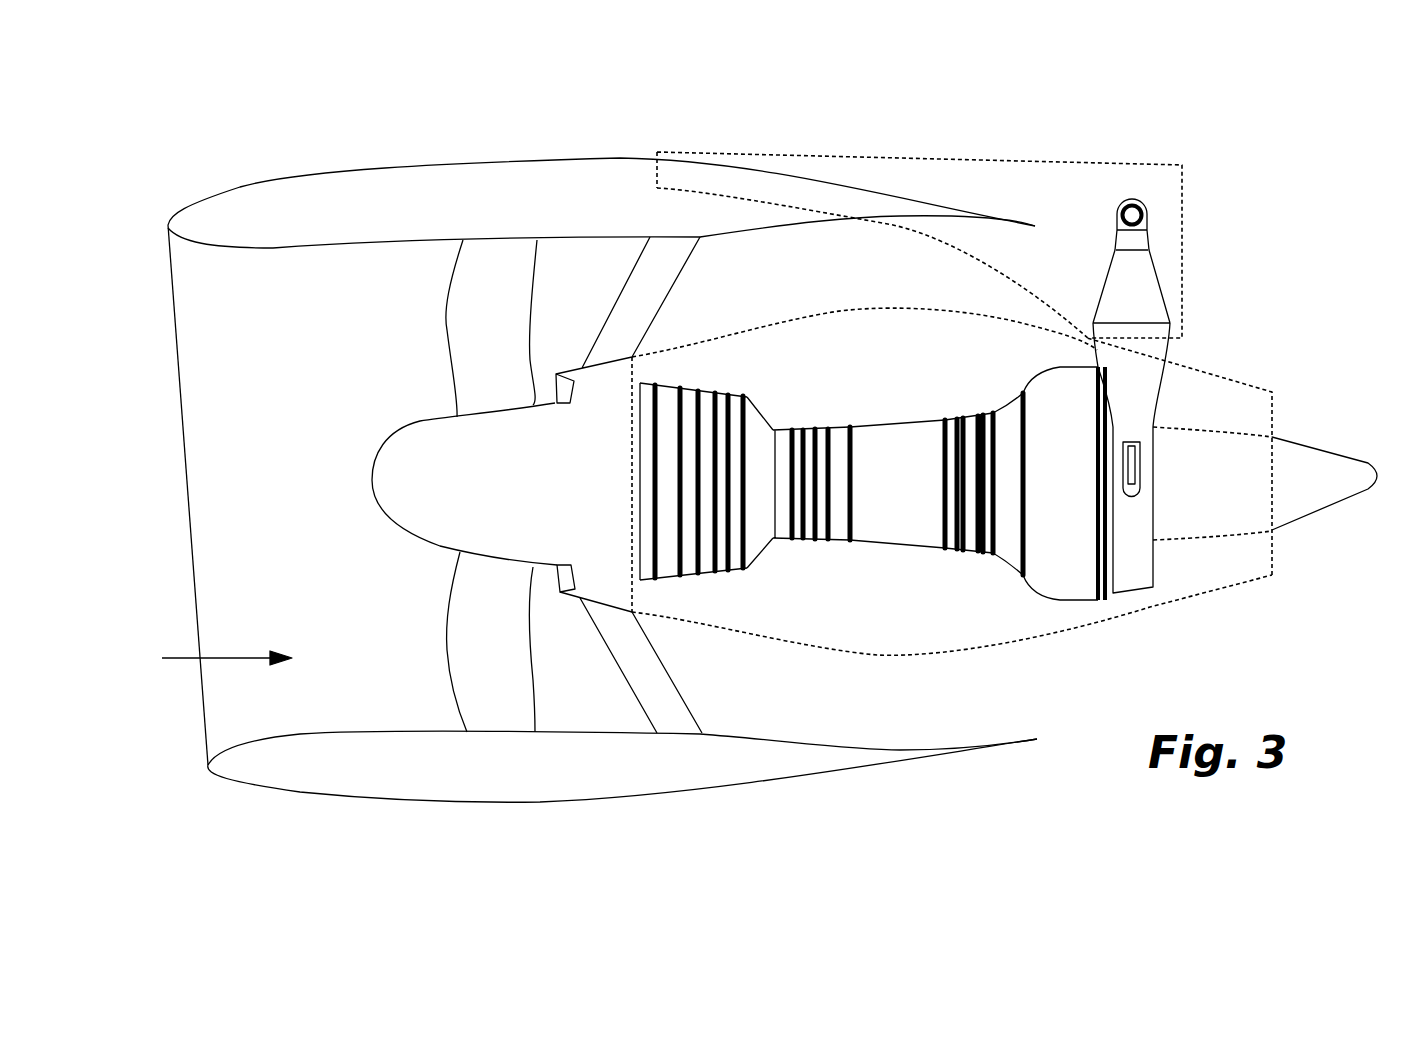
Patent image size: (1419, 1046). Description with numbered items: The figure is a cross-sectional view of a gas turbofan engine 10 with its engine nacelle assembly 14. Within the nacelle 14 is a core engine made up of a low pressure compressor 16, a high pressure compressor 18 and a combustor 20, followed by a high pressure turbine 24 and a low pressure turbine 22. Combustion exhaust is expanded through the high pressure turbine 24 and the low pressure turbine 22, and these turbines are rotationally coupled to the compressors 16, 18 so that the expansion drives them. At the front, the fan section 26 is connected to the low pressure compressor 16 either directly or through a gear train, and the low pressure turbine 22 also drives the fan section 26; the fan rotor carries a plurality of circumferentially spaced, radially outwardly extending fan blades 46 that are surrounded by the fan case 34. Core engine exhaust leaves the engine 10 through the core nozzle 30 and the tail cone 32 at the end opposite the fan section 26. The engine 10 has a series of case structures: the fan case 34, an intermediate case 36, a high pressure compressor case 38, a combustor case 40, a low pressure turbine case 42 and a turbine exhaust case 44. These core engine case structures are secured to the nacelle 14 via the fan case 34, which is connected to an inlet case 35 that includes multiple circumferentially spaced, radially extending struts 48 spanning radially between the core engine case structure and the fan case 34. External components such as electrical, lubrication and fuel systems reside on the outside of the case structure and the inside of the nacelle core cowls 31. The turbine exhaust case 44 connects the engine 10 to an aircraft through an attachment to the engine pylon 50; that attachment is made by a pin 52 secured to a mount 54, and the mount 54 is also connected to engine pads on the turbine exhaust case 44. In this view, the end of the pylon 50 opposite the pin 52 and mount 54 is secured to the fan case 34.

The gas turbofan engine 10 is at (207, 157).
The engine nacelle assembly 14 is at (415, 178).
The low pressure compressor 16 is at (693, 489).
The high pressure compressor 18 is at (822, 487).
The combustor 20 is at (897, 484).
The low pressure turbine 22 is at (1053, 507).
The high pressure turbine 24 is at (960, 553).
The fan section 26 is at (211, 658).
The core nozzle 30 is at (766, 467).
The nacelle core cowls 31 is at (1003, 648).
The tail cone 32 is at (1367, 467).
The fan case 34 is at (600, 237).
The inlet case 35 is at (640, 378).
The intermediate case 36 is at (760, 410).
The high pressure compressor case 38 is at (785, 430).
The combustor case 40 is at (903, 423).
The low pressure turbine case 42 is at (1037, 387).
The turbine exhaust case 44 is at (1088, 352).
The fan blades 46 is at (477, 340).
The struts 48 is at (622, 314).
The engine pylon 50 is at (955, 148).
The pin 52 is at (1143, 212).
The mount 54 is at (1143, 292).